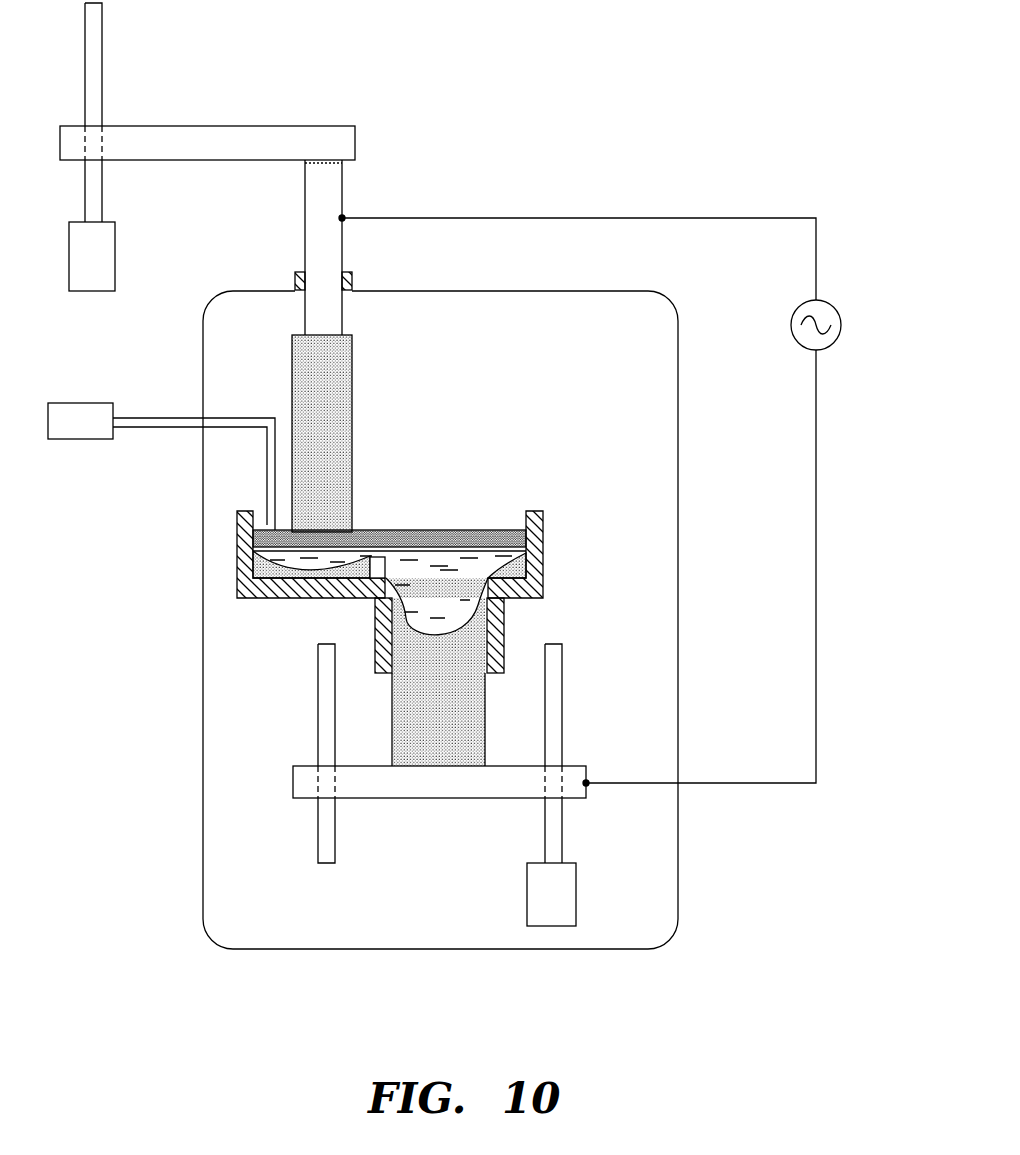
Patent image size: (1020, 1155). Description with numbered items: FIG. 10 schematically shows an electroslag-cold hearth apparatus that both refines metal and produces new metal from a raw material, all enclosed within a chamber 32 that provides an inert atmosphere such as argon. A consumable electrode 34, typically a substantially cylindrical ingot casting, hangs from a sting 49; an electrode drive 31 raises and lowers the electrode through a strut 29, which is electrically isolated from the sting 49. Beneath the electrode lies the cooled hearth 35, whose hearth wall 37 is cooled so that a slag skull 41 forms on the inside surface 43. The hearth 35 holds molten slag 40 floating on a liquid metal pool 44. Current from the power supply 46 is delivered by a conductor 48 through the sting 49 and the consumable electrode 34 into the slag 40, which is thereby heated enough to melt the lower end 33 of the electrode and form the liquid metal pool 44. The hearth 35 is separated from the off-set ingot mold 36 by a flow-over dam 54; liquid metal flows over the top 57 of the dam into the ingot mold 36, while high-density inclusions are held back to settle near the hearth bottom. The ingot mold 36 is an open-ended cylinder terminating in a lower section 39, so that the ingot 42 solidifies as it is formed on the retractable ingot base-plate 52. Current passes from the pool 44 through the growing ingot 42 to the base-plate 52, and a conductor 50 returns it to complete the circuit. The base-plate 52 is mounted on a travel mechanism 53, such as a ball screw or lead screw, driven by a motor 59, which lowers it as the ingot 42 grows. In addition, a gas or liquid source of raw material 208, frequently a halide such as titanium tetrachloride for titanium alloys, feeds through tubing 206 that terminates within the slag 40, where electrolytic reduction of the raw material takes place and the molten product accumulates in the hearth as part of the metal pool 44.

The strut 29 is at (208, 134).
The electrode drive 31 is at (103, 14).
The chamber 32 is at (656, 850).
The lower portion of consumable electrode 33 is at (322, 518).
The consumable electrode 34 is at (338, 451).
The hearth 35 is at (240, 527).
The ingot mold 36 is at (537, 571).
The hearth wall 37 is at (537, 524).
The lower section 39 is at (497, 617).
The molten slag 40 is at (468, 537).
The slag skull 41 is at (262, 572).
The ingot 42 is at (452, 716).
The inside surface of hearth 43 is at (378, 563).
The liquid metal pool 44 is at (313, 568).
The power supply 46 is at (842, 325).
The conductor 48 is at (668, 218).
The sting 49 is at (325, 231).
The conductor 50 is at (817, 460).
The ingot base-plate 52 is at (452, 795).
The travel mechanism 53 is at (325, 709).
The flow-over dam 54 is at (387, 567).
The top of dam 57 is at (374, 557).
The motor 59 is at (566, 906).
The tubing 206 is at (155, 419).
The source of raw material 208 is at (103, 436).